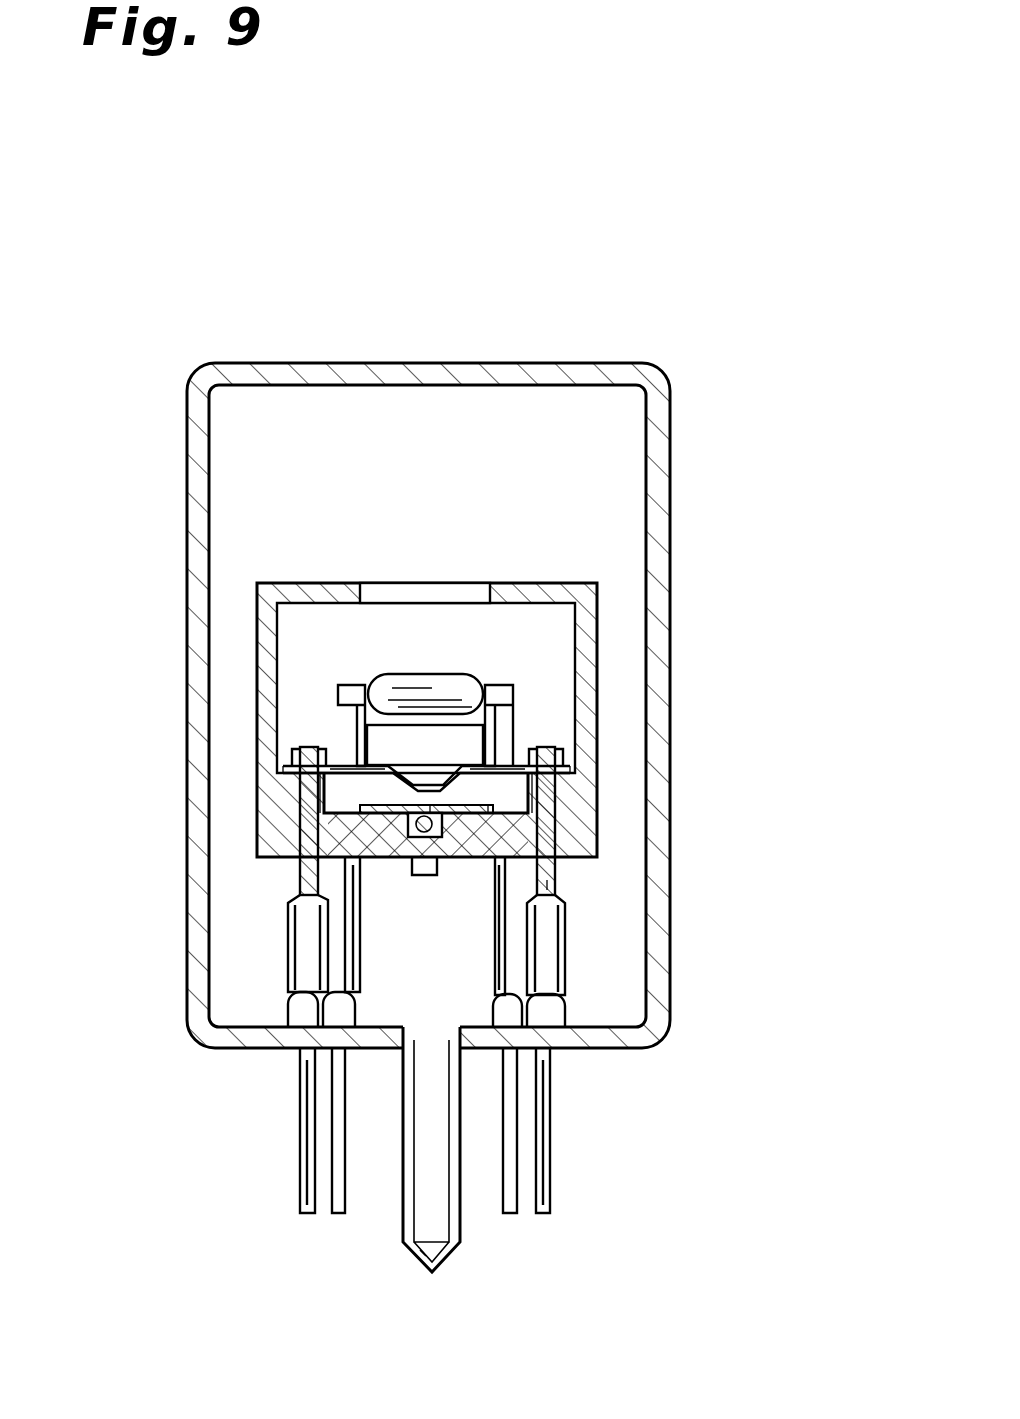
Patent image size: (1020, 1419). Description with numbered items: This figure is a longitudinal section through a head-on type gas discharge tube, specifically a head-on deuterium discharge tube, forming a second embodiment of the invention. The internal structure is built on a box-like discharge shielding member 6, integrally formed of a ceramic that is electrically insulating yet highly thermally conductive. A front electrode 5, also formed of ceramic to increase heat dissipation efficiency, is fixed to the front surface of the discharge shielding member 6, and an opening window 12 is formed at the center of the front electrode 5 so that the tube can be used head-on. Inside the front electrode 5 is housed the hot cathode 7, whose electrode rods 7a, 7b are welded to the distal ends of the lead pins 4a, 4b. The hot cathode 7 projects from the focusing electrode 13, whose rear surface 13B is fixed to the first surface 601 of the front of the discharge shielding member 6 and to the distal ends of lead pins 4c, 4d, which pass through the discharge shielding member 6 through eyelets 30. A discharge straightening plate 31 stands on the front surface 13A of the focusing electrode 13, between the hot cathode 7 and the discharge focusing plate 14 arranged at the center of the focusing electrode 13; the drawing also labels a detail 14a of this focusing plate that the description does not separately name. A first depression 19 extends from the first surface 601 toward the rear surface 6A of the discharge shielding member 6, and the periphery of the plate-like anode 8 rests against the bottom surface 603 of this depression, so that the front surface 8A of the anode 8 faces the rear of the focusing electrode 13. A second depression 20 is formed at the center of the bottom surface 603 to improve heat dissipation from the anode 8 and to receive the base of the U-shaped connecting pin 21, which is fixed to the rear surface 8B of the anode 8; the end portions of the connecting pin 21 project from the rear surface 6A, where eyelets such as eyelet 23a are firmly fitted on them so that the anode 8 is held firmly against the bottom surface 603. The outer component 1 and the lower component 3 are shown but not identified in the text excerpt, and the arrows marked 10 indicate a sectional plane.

The housing 1 is at (670, 455).
The terminal blade 3 is at (614, 1048).
The lead pin 4a is at (345, 955).
The lead pin 4b is at (510, 960).
The lead pin 4c is at (307, 942).
The lead pin 4d is at (570, 952).
The front electrode 5 is at (583, 616).
The discharge shielding member 6 is at (290, 805).
The rear surface 6A is at (568, 912).
The hot cathode 7 is at (442, 698).
The electrode rod 7a is at (345, 688).
The electrode rod 7b is at (497, 690).
The anode 8 is at (322, 795).
The front surface 8A is at (558, 883).
The rear surface 8B is at (490, 815).
The section line 10 is at (427, 280).
The opening window 12 is at (428, 597).
The focusing electrode 13 is at (482, 792).
The front surface 13A is at (326, 766).
The rear surface 13B is at (330, 788).
The discharge focusing plate 14 is at (380, 766).
The plate recess 14a is at (427, 777).
The first depression 19 is at (462, 812).
The second depression 20 is at (340, 832).
The connecting pin 21 is at (437, 845).
The eyelet 23a is at (418, 838).
The eyelet 30 is at (312, 722).
The discharge straightening plate 31 is at (467, 743).
The first surface 601 is at (290, 760).
The bottom surface 603 is at (563, 768).